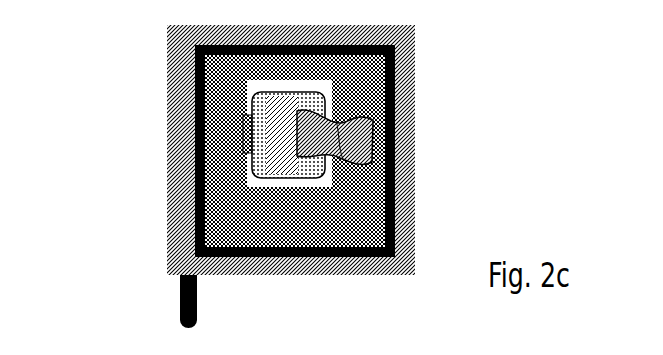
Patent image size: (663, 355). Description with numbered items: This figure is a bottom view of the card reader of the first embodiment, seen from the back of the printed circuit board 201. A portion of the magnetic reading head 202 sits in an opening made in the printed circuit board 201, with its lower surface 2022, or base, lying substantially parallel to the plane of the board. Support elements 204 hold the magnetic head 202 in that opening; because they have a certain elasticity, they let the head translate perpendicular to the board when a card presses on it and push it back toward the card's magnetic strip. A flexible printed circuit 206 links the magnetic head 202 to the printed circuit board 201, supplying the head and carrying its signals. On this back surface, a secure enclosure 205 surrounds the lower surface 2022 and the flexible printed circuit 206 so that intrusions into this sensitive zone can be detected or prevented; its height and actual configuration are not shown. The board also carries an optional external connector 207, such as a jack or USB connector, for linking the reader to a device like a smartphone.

The printed circuit board 201 is at (190, 170).
The magnetic reading head 202 is at (293, 181).
The lower surface 2022 is at (273, 120).
The support elements 204 is at (243, 130).
The secure enclosure 205 is at (390, 75).
The flexible printed circuit 206 is at (350, 141).
The external connector 207 is at (180, 303).